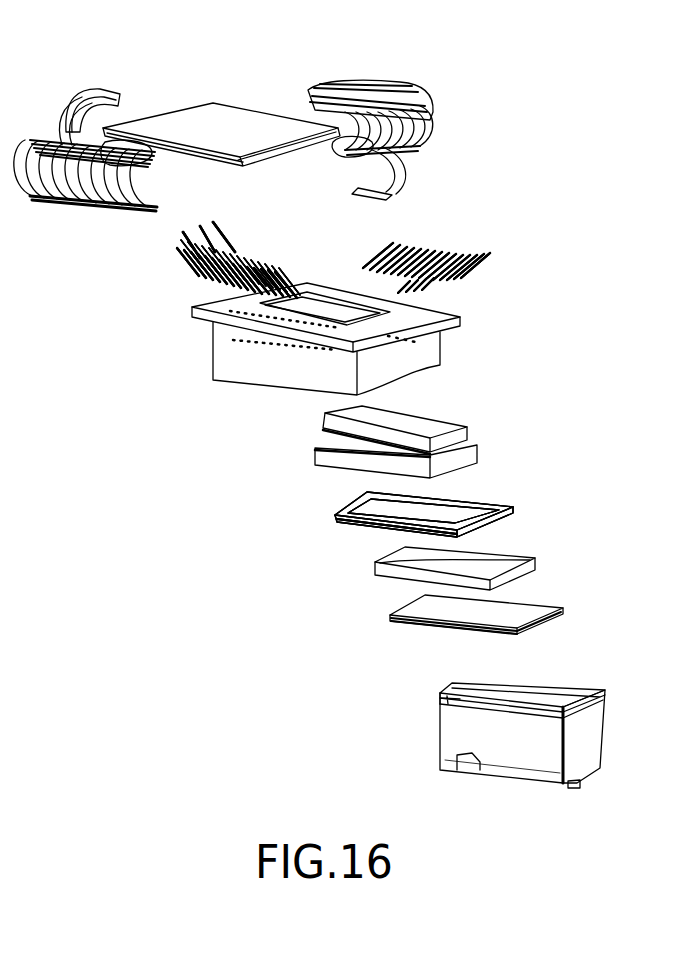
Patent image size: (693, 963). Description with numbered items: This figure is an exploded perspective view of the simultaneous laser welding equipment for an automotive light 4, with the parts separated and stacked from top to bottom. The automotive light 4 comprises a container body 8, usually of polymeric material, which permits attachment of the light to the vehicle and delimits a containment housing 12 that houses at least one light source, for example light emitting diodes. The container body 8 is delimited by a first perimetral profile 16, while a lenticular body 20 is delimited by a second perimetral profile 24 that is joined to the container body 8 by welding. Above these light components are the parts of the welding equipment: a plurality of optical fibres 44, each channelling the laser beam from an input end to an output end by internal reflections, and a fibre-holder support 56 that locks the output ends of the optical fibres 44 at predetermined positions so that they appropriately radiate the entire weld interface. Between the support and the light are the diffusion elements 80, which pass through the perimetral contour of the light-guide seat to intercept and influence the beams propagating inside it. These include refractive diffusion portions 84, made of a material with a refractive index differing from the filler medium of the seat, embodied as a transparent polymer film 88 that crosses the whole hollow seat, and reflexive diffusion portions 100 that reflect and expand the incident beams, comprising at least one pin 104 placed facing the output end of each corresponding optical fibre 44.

The automotive light 4 is at (491, 724).
The container body 8 is at (523, 753).
The containment housing 12 is at (556, 696).
The first perimetral profile 16 is at (440, 688).
The lenticular body 20 is at (497, 563).
The second perimetral profile 24 is at (400, 625).
The optical fibres 44 is at (430, 108).
The fibre-holder support 56 is at (450, 342).
The diffusion elements 80 is at (445, 243).
The refractive diffusion portions 84 is at (424, 514).
The film 88 is at (424, 514).
The reflexive diffusion portions 100 is at (333, 260).
The pin 104 is at (333, 260).